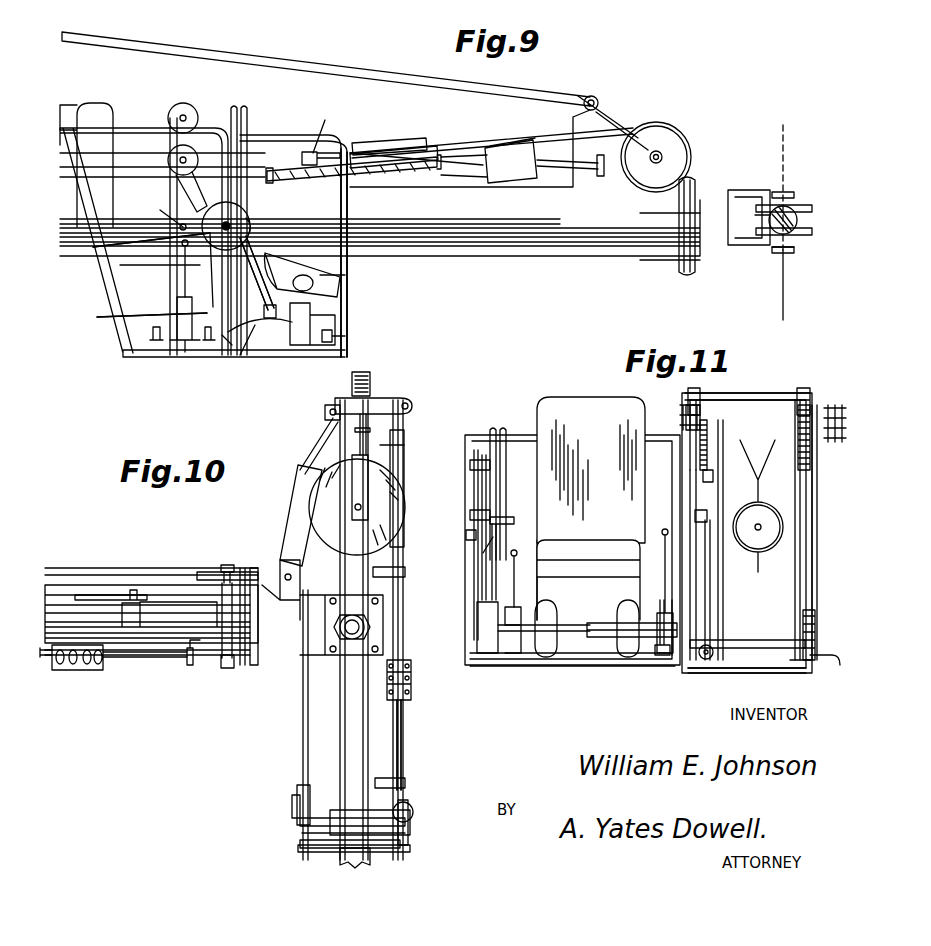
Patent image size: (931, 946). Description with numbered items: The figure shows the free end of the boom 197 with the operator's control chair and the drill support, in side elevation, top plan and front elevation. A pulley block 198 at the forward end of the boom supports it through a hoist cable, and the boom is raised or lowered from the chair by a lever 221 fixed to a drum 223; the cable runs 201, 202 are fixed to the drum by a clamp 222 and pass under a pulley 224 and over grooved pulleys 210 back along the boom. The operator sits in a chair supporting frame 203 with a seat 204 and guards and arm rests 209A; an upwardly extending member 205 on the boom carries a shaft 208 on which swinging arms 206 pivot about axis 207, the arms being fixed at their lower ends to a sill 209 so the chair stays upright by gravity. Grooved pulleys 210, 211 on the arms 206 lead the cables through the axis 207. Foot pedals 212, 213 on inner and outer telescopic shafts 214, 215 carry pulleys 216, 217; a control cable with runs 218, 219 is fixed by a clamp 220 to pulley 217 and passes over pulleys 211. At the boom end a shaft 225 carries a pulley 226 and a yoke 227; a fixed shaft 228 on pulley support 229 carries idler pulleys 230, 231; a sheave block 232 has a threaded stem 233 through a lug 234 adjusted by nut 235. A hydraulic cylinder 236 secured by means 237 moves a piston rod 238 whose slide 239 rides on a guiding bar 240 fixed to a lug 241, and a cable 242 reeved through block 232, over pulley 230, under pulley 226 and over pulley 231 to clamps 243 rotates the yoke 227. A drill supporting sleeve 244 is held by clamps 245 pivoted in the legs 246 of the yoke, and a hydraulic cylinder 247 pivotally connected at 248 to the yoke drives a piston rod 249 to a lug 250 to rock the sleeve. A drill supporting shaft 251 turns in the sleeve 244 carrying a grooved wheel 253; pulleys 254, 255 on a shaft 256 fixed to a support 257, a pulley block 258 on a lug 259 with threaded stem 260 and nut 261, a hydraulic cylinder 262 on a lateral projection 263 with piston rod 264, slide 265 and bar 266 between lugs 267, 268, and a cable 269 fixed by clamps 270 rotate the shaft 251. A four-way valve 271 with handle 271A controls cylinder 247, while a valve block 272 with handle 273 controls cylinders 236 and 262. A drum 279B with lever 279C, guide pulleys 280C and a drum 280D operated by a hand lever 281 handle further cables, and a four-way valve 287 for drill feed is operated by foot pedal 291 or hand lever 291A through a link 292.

In FIG. 9, the boom 197 is at (562, 248).
In FIG. 9, the pulley block 198 is at (590, 96).
In FIG. 9, the cable run 201 is at (185, 268).
In FIG. 11, the cable run 201 is at (706, 420).
In FIG. 9, the cable run 202 is at (244, 238).
In FIG. 11, the cable run 202 is at (716, 592).
In FIG. 9, the chair supporting frame 203 is at (139, 368).
In FIG. 11, the chair supporting frame 203 is at (729, 697).
In FIG. 9, the seat 204 is at (108, 258).
In FIG. 11, the seat 204 is at (610, 565).
In FIG. 11, the upwardly extending member 205 is at (778, 455).
In FIG. 11, the swinging arms 206 is at (795, 578).
In FIG. 11, the axis 207 is at (834, 406).
In FIG. 11, the shaft 208 is at (778, 398).
In FIG. 11, the sill 209 is at (565, 668).
In FIG. 9, the guards and arm rests 209A is at (347, 284).
In FIG. 11, the guards and arm rests 209A is at (530, 437).
In FIG. 9, the grooved pulleys 210 is at (204, 102).
In FIG. 11, the grooved pulleys 210 is at (716, 400).
In FIG. 11, the grooved pulleys 211 is at (797, 418).
In FIG. 11, the foot pedal 212 is at (542, 658).
In FIG. 11, the foot pedal 213 is at (622, 658).
In FIG. 11, the inner telescopic shaft 214 is at (560, 632).
In FIG. 11, the outer telescopic shaft 215 is at (614, 623).
In FIG. 11, the pulley 216 is at (838, 665).
In FIG. 9, the pulley 217 is at (348, 306).
In FIG. 11, the pulley 217 is at (800, 672).
In FIG. 9, the control cable run 218 is at (305, 282).
In FIG. 9, the control cable run 219 is at (330, 276).
In FIG. 9, the clamp 220 is at (334, 336).
In FIG. 9, the lever 221 is at (262, 84).
In FIG. 11, the lever 221 is at (492, 428).
In FIG. 9, the clamp 222 is at (226, 202).
In FIG. 9, the drum 223 is at (234, 218).
In FIG. 11, the drum 223 is at (480, 528).
In FIG. 9, the pulley 224 is at (128, 102).
In FIG. 11, the pulley 224 is at (716, 652).
In FIG. 9, the shaft 225 is at (670, 258).
In FIG. 9, the pulley 226 is at (692, 282).
In FIG. 9, the yoke 227 is at (752, 190).
In FIG. 10, the yoke 227 is at (292, 640).
In FIG. 9, the fixed shaft 228 is at (664, 156).
In FIG. 10, the fixed shaft 228 is at (205, 592).
In FIG. 9, the pulley support 229 is at (620, 118).
In FIG. 10, the idler pulley 230 is at (208, 566).
In FIG. 9, the idler pulley 231 is at (682, 128).
In FIG. 10, the idler pulley 231 is at (232, 670).
In FIG. 9, the sheave block 232 is at (410, 140).
In FIG. 9, the threaded stem 233 is at (330, 147).
In FIG. 9, the lug 234 is at (326, 135).
In FIG. 9, the nut 235 is at (316, 154).
In FIG. 9, the hydraulic cylinder 236 is at (382, 182).
In FIG. 9, the securing means 237 is at (272, 178).
In FIG. 9, the piston rod 238 is at (462, 156).
In FIG. 9, the slide 239 is at (510, 142).
In FIG. 10, the slide 239 is at (70, 670).
In FIG. 9, the guiding bar 240 is at (570, 162).
In FIG. 10, the guiding bar 240 is at (154, 668).
In FIG. 9, the lug 241 is at (606, 175).
In FIG. 10, the lug 241 is at (198, 670).
In FIG. 9, the cable 242 is at (562, 140).
In FIG. 10, the cable 242 is at (125, 570).
In FIG. 10, the clamps 243 is at (150, 668).
In FIG. 9, the drill supporting sleeve 244 is at (772, 200).
In FIG. 10, the drill supporting sleeve 244 is at (343, 679).
In FIG. 9, the clamps 245 is at (792, 212).
In FIG. 9, the legs 246 is at (800, 200).
In FIG. 10, the hydraulic cylinder 247 is at (292, 520).
In FIG. 10, the pivotal connection 248 is at (276, 572).
In FIG. 10, the piston rod 249 is at (312, 448).
In FIG. 10, the lug 250 is at (328, 404).
In FIG. 9, the drill supporting shaft 251 is at (783, 278).
In FIG. 10, the drill supporting shaft 251 is at (370, 385).
In FIG. 10, the grooved wheel 253 is at (380, 858).
In FIG. 10, the pulley 254 is at (298, 787).
In FIG. 10, the pulley 255 is at (408, 802).
In FIG. 10, the shaft 256 is at (320, 813).
In FIG. 10, the support 257 is at (330, 839).
In FIG. 10, the pulley block 258 is at (351, 495).
In FIG. 10, the lug 259 is at (360, 438).
In FIG. 10, the threaded stem 260 is at (378, 446).
In FIG. 10, the nut 261 is at (356, 430).
In FIG. 10, the hydraulic cylinder 262 is at (412, 468).
In FIG. 10, the lateral projection 263 is at (392, 414).
In FIG. 10, the piston rod 264 is at (410, 620).
In FIG. 10, the slide 265 is at (412, 683).
In FIG. 10, the bar 266 is at (404, 740).
In FIG. 10, the lug 267 is at (388, 778).
In FIG. 10, the lug 268 is at (400, 572).
In FIG. 10, the cable 269 is at (304, 704).
In FIG. 10, the clamps 270 is at (412, 665).
In FIG. 11, the four-way valve 271 is at (662, 658).
In FIG. 9, the handle 271A is at (178, 226).
In FIG. 11, the handle 271A is at (660, 560).
In FIG. 9, the valve block 272 is at (178, 305).
In FIG. 11, the valve block 272 is at (520, 612).
In FIG. 9, the handle 273 is at (182, 258).
In FIG. 11, the handle 273 is at (516, 572).
In FIG. 11, the drum 279B is at (702, 470).
In FIG. 11, the lever 279C is at (706, 520).
In FIG. 9, the guide pulleys 280C is at (150, 332).
In FIG. 9, the drum 280D is at (168, 151).
In FIG. 11, the drum 280D is at (478, 480).
In FIG. 9, the belt 281 is at (185, 184).
In FIG. 11, the belt 281 is at (496, 515).
In FIG. 9, the four-way valve 287 is at (300, 346).
In FIG. 11, the four-way valve 287 is at (488, 655).
In FIG. 9, the foot pedal 291 is at (243, 352).
In FIG. 9, the hand lever 291A is at (250, 118).
In FIG. 11, the hand lever 291A is at (504, 428).
In FIG. 9, the link 292 is at (250, 247).
In FIG. 11, the link 292 is at (500, 560).